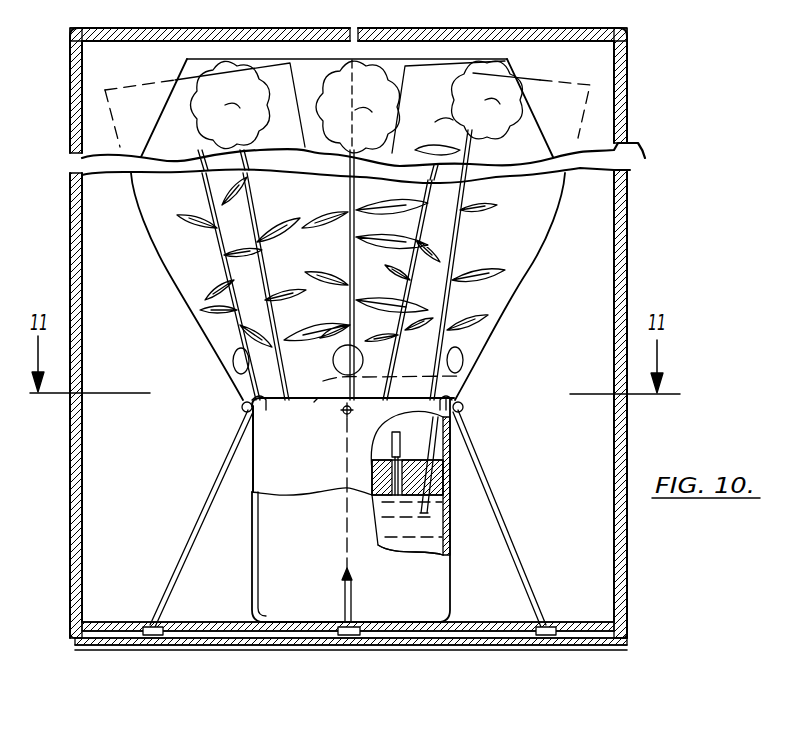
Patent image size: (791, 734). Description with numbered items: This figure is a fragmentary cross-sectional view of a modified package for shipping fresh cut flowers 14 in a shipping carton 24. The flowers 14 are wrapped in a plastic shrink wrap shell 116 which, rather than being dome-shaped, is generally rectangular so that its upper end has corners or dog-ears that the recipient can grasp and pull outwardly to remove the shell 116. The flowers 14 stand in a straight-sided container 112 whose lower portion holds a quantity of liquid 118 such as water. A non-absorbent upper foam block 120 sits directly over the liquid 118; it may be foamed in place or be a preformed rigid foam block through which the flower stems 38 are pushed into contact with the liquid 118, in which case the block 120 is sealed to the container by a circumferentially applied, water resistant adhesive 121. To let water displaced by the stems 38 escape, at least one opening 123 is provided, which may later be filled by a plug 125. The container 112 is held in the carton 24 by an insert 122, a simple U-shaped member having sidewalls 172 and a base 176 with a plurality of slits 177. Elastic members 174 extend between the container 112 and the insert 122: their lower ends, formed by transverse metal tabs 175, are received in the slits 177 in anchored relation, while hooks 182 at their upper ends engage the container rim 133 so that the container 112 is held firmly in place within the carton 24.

The shipping carton 24 is at (630, 120).
The sidewalls 172 is at (630, 188).
The insert 122 is at (613, 323).
The plastic shrink wrap shell 116 is at (140, 226).
The fresh cut flowers 14 is at (222, 256).
The container 112 is at (252, 532).
The non-absorbent upper foam block 120 is at (412, 452).
The water resistant adhesive 121 is at (350, 493).
The plug 125 is at (391, 442).
The flower stems 38 is at (438, 502).
The liquid 118 is at (444, 536).
The opening 123 is at (343, 497).
The container rim 133 is at (316, 406).
The hooks 182 is at (240, 395).
The elastic members 174 is at (212, 468).
The transverse metal tabs 175 is at (150, 636).
The slits 177 is at (146, 622).
The base 176 is at (478, 621).